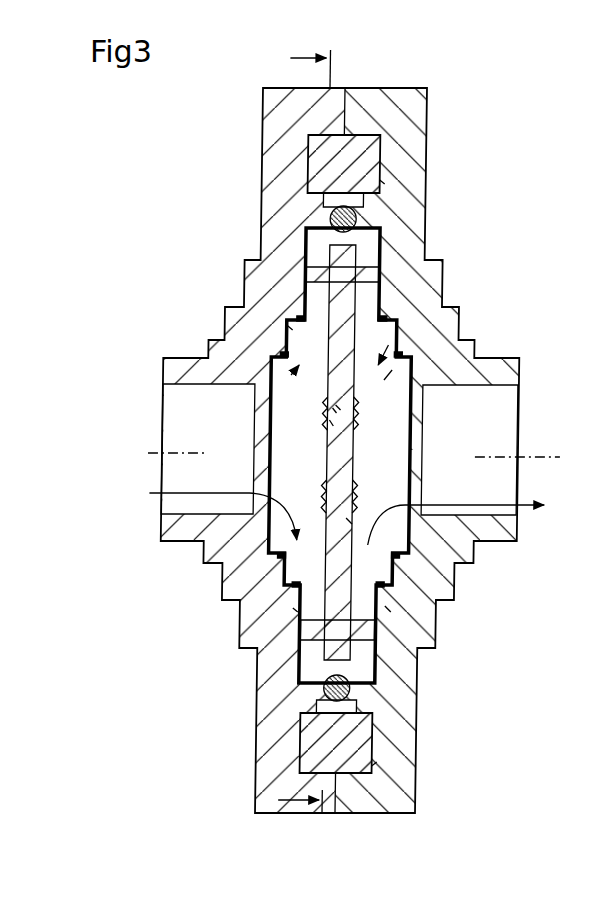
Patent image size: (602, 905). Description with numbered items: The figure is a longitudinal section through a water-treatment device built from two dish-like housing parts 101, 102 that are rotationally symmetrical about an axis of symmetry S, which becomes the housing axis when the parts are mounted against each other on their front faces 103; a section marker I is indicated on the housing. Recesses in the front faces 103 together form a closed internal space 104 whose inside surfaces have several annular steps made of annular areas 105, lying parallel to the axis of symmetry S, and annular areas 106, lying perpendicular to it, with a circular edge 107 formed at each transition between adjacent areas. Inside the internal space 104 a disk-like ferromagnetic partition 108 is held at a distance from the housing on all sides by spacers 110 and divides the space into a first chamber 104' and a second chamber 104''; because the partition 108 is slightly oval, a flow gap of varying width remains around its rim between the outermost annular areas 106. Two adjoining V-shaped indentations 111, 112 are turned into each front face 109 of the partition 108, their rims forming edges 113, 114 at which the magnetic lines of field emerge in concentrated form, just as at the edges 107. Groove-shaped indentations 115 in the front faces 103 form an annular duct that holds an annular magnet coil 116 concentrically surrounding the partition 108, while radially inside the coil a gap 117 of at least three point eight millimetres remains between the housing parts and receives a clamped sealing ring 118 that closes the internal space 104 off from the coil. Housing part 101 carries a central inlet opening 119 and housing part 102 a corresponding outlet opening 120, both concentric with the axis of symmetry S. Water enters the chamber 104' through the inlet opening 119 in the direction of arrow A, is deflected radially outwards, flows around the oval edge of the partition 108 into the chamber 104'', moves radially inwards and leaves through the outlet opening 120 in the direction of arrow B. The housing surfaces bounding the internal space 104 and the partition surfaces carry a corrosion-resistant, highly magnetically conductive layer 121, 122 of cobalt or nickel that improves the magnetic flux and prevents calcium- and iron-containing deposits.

The housing part 101 is at (292, 111).
The housing part 102 is at (407, 112).
The front face 103 is at (353, 100).
The internal space 104 is at (450, 312).
The chamber 104' is at (236, 321).
The chamber 104'' is at (458, 344).
The annular area 105 is at (438, 273).
The annular area 106 is at (385, 232).
The edge 107 is at (356, 520).
The partition 108 is at (309, 300).
The front face 109 is at (323, 384).
The spacer 110 is at (340, 292).
The V-shaped indentation 111 is at (342, 408).
The V-shaped indentation 112 is at (337, 423).
The edge 113 is at (352, 483).
The edge 114 is at (340, 410).
The groove-shaped indentation 115 is at (378, 186).
The magnet coil 116 is at (360, 160).
The gap 117 is at (362, 200).
The sealing ring 118 is at (334, 208).
The inlet opening 119 is at (185, 421).
The outlet opening 120 is at (517, 441).
The layer 121 is at (297, 330).
The layer 122 is at (397, 610).
The arrow A is at (209, 510).
The arrow B is at (467, 519).
The axis of symmetry S is at (527, 457).
The section line I is at (310, 431).